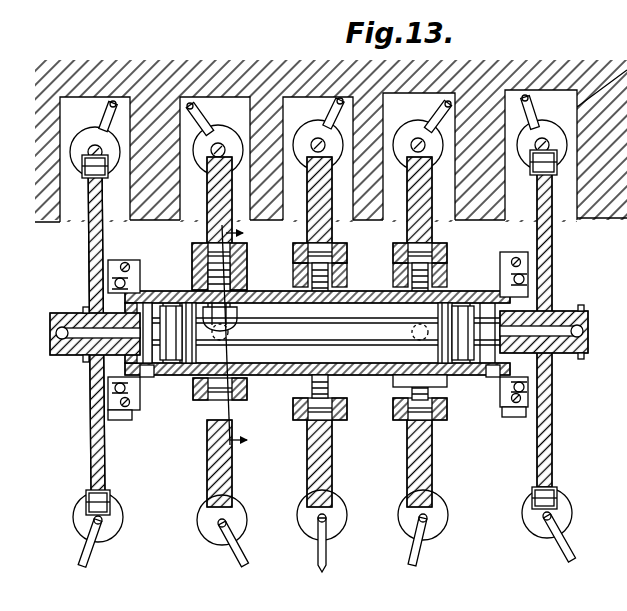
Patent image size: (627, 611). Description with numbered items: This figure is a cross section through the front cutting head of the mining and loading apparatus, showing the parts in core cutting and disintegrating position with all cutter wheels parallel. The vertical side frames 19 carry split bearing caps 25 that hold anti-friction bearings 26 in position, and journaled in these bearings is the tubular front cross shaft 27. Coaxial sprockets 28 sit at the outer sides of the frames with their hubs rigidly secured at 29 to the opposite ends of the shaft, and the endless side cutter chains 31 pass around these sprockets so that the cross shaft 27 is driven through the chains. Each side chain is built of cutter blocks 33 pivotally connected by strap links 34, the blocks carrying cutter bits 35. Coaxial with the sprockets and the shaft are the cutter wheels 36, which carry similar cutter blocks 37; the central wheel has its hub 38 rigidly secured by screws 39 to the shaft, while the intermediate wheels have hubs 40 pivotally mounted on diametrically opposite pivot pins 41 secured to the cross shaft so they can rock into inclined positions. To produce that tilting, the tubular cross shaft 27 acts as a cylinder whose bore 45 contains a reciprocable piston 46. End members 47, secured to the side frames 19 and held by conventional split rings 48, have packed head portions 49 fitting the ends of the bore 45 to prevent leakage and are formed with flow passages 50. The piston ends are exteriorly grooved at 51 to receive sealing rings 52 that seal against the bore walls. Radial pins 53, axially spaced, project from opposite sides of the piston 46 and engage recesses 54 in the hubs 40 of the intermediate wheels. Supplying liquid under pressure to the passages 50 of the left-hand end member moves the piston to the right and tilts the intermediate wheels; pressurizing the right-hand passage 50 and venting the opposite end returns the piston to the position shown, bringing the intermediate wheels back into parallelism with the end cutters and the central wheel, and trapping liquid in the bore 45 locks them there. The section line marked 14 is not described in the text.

The section line 14 is at (247, 335).
The vertical side frames 19 is at (134, 420).
The split bearing caps 25 is at (140, 262).
The anti-friction bearings 26 is at (119, 262).
The front cross shaft 27 is at (250, 292).
The coaxial sprockets 28 is at (88, 232).
The hub securing portion 29 is at (112, 292).
The side cutter chains 31 is at (92, 128).
The cutter blocks 33 is at (115, 100).
The strap links 34 is at (106, 174).
The cutter bits 35 is at (90, 562).
The cutter wheels 36 is at (212, 207).
The cutter blocks 37 is at (410, 530).
The central wheel hub 38 is at (348, 268).
The screws 39 is at (300, 428).
The intermediate wheel hubs 40 is at (198, 400).
The pivot pins 41 is at (229, 332).
The bore 45 is at (272, 376).
The piston 46 is at (360, 310).
The end members 47 is at (80, 312).
The split rings 48 is at (84, 361).
The packed head portions 49 is at (150, 370).
The flow passages 50 is at (61, 327).
The exterior grooves 51 is at (190, 300).
The sealing rings 52 is at (180, 310).
The radial pins 53 is at (247, 262).
The recesses 54 is at (222, 242).